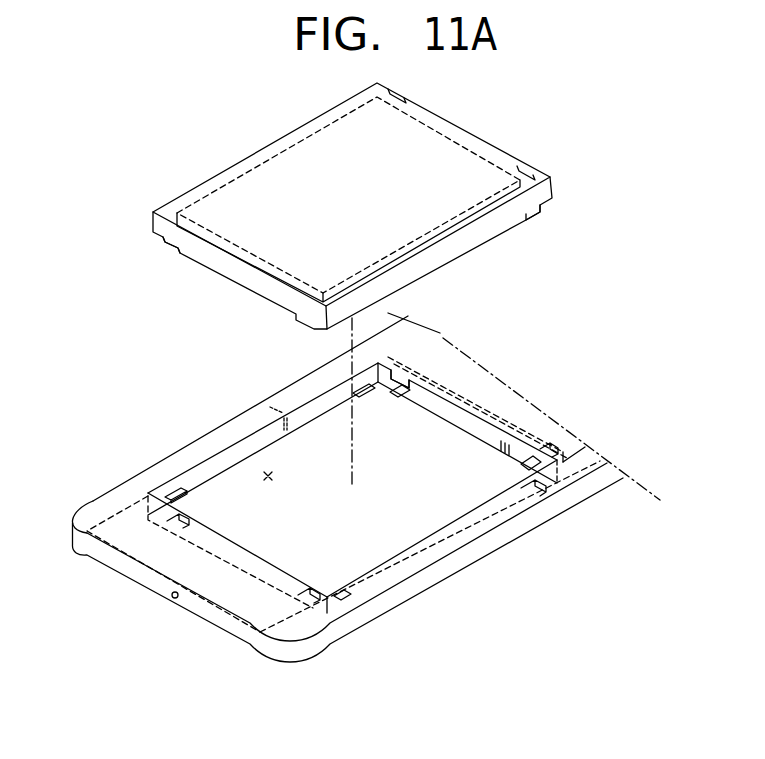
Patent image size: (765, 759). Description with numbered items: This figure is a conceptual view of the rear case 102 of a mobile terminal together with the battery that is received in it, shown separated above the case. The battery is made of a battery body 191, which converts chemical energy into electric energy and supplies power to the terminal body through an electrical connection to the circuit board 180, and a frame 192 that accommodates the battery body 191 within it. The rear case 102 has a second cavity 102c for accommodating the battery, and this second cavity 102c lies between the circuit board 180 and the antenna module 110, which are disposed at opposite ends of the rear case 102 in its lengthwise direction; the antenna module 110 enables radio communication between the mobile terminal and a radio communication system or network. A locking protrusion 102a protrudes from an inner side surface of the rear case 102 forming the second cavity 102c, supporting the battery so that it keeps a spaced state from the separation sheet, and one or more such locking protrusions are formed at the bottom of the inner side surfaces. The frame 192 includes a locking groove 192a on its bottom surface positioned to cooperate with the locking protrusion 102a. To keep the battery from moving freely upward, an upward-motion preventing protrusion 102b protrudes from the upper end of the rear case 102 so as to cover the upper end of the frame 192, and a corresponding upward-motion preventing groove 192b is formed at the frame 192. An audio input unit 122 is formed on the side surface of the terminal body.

The battery body 191 is at (348, 199).
The frame 192 is at (268, 158).
The locking groove 192a is at (175, 242).
The upward-motion preventing groove 192b is at (531, 174).
The rear case 102 is at (130, 498).
The locking protrusion 102a is at (172, 492).
The upward-motion preventing protrusion 102b is at (405, 376).
The second cavity 102c is at (268, 474).
The antenna module 110 is at (303, 632).
The circuit board 180 is at (576, 462).
The audio input unit 122 is at (172, 597).